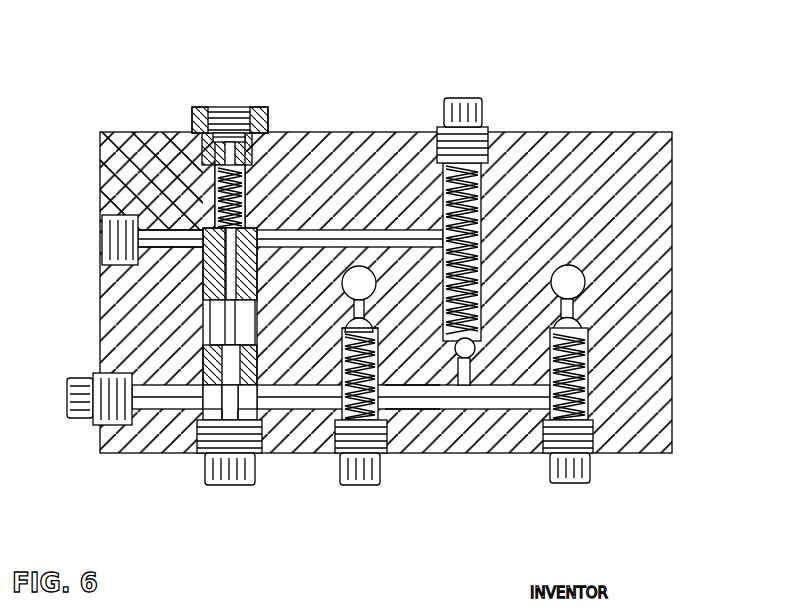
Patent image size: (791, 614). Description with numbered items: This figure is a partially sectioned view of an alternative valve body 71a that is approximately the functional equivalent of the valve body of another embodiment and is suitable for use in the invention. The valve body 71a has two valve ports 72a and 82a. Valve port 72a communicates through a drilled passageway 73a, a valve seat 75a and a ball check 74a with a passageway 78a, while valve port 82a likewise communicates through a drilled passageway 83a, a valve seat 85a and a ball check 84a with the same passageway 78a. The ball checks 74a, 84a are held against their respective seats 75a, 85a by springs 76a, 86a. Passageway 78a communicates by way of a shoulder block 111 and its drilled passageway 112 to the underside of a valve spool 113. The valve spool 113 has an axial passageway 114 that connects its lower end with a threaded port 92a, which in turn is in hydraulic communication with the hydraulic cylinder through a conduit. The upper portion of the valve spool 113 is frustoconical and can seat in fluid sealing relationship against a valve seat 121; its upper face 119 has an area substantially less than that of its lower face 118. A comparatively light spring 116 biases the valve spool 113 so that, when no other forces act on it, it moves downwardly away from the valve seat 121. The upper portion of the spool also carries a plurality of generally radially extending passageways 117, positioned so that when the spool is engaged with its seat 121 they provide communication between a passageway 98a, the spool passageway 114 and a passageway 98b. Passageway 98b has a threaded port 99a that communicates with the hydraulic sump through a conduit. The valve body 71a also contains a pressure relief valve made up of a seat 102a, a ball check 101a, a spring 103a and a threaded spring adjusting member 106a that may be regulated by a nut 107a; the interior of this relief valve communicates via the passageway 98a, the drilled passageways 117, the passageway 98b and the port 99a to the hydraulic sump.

The valve body 71a is at (627, 128).
The valve port 72a is at (578, 285).
The drilled passageway 73a is at (576, 310).
The ball check 74a is at (586, 345).
The valve seat 75a is at (582, 326).
The spring 76a is at (587, 397).
The passageway 78a is at (515, 420).
The valve port 82a is at (340, 300).
The drilled passageway 83a is at (350, 332).
The ball check 84a is at (345, 362).
The valve seat 85a is at (406, 410).
The spring 86a is at (343, 487).
The threaded port 92a is at (236, 106).
The passageway 98a is at (385, 247).
The passageway 98b is at (158, 247).
The threaded port 99a is at (118, 240).
The ball check 101a is at (488, 335).
The seat 102a is at (470, 380).
The spring 103a is at (458, 358).
The threaded spring adjusting member 106a is at (490, 132).
The nut 107a is at (467, 98).
The shoulder block 111 is at (190, 392).
The drilled passageway 112 is at (228, 400).
The valve spool 113 is at (205, 272).
The axial passageway 114 is at (205, 340).
The spring 116 is at (252, 165).
The radially extending passageways 117 is at (157, 240).
The lower face 118 is at (207, 312).
The upper face 119 is at (212, 228).
The valve seat 121 is at (255, 190).